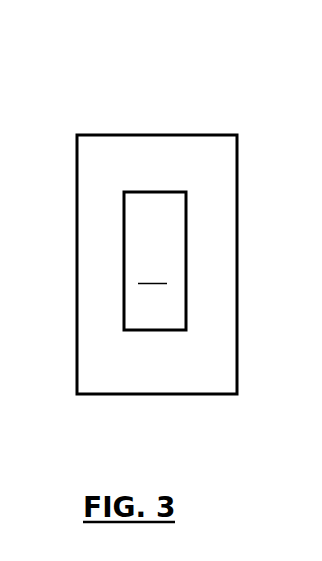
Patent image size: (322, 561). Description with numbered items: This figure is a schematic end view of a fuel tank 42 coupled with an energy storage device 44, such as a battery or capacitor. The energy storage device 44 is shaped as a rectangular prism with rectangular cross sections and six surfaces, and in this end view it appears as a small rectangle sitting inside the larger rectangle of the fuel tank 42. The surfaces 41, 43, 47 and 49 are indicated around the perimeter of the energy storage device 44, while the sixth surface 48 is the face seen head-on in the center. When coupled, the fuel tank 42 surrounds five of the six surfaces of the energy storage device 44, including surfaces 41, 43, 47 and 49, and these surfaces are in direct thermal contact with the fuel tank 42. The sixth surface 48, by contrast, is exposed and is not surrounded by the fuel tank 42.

The surface 41 is at (152, 188).
The fuel tank 42 is at (190, 135).
The surface 43 is at (150, 334).
The energy storage device 44 is at (186, 215).
The surface 47 is at (121, 280).
The sixth surface 48 is at (152, 272).
The surface 49 is at (191, 284).